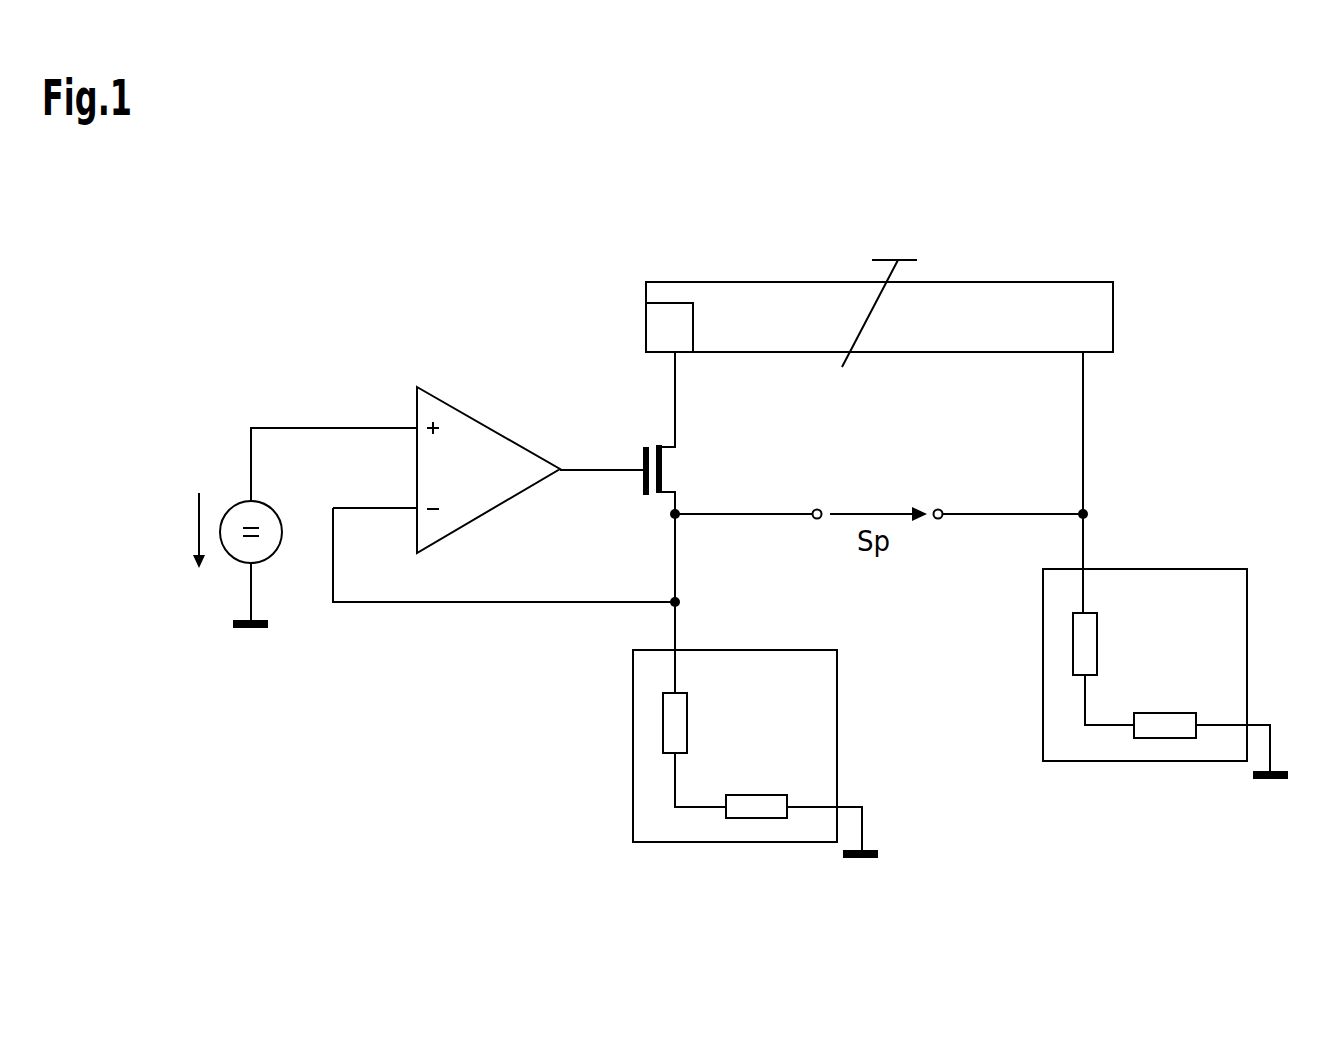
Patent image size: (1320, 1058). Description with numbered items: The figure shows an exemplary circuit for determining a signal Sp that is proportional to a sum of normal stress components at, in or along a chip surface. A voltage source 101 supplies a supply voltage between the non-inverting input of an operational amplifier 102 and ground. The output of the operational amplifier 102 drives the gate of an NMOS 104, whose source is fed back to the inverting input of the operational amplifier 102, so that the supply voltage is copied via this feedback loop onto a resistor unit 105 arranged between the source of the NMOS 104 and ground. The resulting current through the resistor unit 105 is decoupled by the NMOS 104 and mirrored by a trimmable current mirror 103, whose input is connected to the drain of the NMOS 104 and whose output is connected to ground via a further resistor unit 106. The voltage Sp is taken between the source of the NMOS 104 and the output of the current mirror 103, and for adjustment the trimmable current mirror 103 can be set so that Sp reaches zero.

The voltage source 101 is at (286, 528).
The operational amplifier 102 is at (472, 417).
The trimmable current mirror 103 is at (1098, 283).
The NMOS 104 is at (617, 433).
The resistor unit 105 is at (631, 685).
The resistor unit 106 is at (1043, 642).